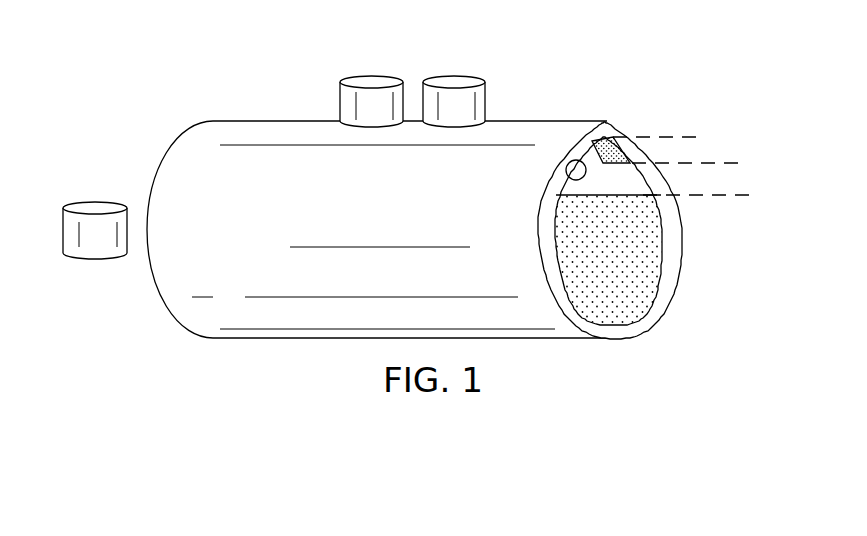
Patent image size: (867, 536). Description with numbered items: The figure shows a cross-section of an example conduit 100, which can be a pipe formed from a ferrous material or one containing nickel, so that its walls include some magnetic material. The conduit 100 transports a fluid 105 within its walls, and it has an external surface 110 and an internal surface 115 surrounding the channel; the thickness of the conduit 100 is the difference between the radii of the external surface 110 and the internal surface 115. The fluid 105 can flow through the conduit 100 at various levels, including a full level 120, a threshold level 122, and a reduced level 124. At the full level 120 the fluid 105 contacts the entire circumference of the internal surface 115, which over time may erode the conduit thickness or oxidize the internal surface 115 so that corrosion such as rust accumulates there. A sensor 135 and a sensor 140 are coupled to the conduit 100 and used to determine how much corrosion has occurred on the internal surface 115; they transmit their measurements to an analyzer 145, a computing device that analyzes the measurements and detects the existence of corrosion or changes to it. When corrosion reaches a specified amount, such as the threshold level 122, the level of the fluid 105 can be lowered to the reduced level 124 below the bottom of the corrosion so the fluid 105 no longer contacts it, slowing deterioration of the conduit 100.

The conduit 100 is at (162, 353).
The fluid 105 is at (628, 259).
The external surface 110 is at (243, 118).
The internal surface 115 is at (567, 173).
The full level 120 is at (672, 137).
The threshold level 122 is at (733, 163).
The reduced level 124 is at (722, 197).
The sensor 135 is at (370, 82).
The sensor 140 is at (453, 82).
The analyzer 145 is at (95, 208).